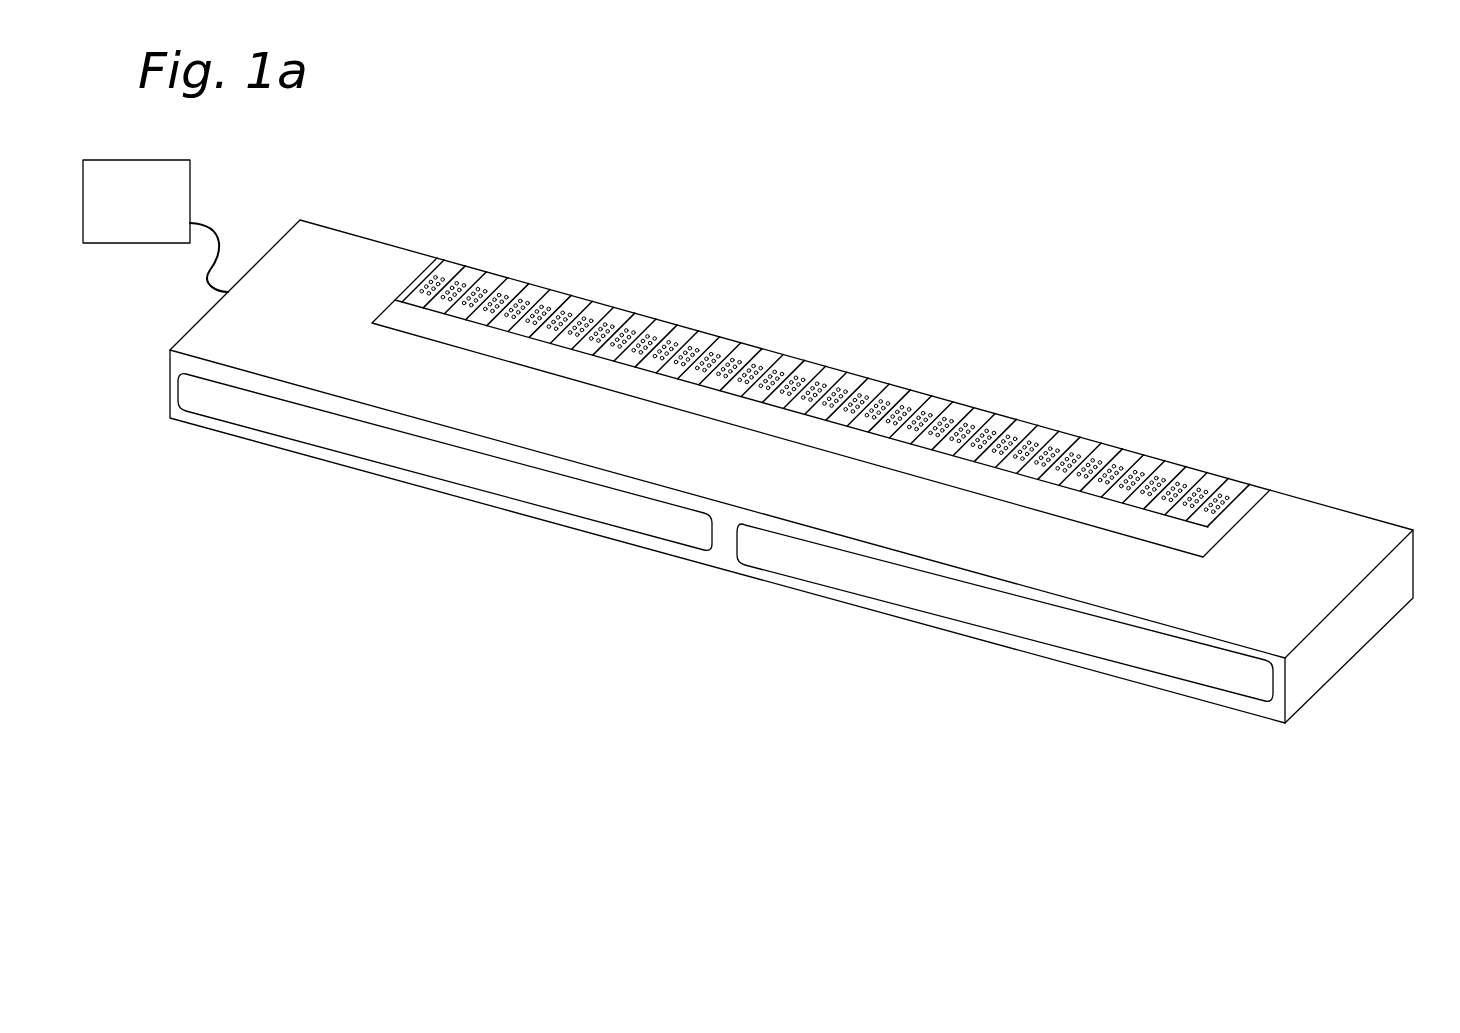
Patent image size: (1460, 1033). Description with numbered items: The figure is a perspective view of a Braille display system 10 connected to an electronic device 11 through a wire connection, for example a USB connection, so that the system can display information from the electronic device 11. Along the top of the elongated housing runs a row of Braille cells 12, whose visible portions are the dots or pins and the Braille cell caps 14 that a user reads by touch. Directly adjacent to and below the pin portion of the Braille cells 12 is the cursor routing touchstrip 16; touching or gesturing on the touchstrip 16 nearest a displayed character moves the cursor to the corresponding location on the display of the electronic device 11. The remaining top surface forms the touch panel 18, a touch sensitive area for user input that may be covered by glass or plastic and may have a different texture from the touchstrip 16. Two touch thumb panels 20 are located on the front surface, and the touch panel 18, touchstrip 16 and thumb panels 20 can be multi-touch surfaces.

The Braille display system 10 is at (1052, 384).
The electronic device 11 is at (117, 173).
The Braille cells 12 is at (583, 312).
The Braille cell caps 14 is at (712, 342).
The cursor routing touchstrip 16 is at (407, 320).
The touch panel 18 is at (1312, 595).
The touch thumb panels 20 is at (612, 505).